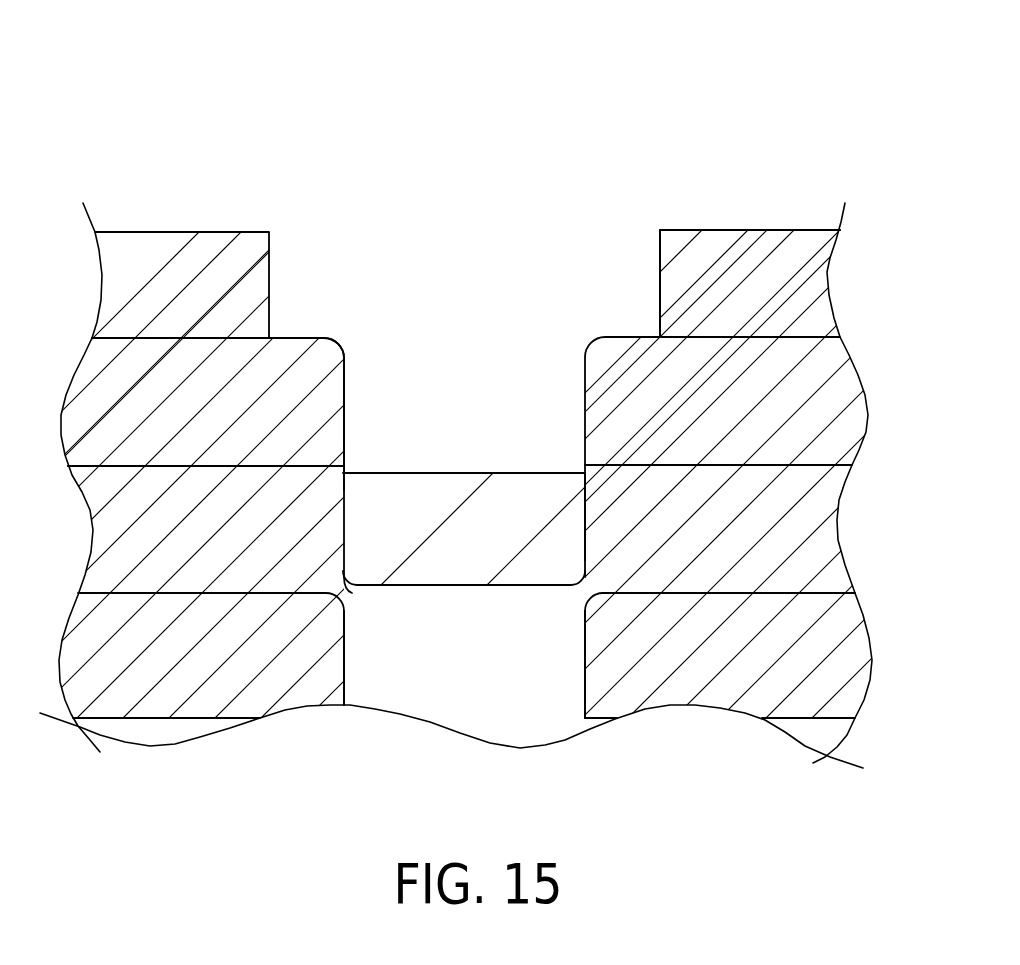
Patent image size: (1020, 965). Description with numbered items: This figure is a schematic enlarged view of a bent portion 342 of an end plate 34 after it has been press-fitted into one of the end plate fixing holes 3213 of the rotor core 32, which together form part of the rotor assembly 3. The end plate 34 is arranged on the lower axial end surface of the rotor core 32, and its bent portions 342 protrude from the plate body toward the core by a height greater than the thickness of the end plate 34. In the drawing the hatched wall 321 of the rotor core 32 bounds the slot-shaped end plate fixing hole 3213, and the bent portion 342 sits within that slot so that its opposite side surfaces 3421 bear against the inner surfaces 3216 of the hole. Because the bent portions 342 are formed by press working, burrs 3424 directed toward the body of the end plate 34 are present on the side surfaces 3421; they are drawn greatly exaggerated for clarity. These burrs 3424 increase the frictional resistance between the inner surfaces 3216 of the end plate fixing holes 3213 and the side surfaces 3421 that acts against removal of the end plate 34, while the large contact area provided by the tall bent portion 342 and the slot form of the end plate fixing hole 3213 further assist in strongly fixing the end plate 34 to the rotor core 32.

The connector / fitting assembly 3 is at (95, 32).
The rotor core 32 is at (185, 128).
The wall portion of first member 321 is at (259, 387).
The end plate fixing hole 3213 is at (435, 673).
The inner surface 3216 is at (345, 515).
The end plate 34 is at (767, 82).
The bent portion 342 is at (672, 147).
The side surface 3421 is at (585, 515).
The burr 3424 is at (344, 468).